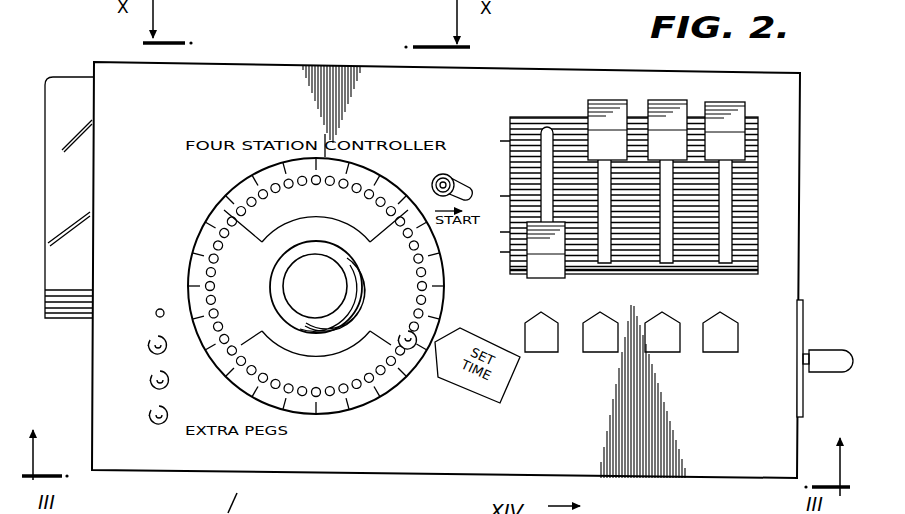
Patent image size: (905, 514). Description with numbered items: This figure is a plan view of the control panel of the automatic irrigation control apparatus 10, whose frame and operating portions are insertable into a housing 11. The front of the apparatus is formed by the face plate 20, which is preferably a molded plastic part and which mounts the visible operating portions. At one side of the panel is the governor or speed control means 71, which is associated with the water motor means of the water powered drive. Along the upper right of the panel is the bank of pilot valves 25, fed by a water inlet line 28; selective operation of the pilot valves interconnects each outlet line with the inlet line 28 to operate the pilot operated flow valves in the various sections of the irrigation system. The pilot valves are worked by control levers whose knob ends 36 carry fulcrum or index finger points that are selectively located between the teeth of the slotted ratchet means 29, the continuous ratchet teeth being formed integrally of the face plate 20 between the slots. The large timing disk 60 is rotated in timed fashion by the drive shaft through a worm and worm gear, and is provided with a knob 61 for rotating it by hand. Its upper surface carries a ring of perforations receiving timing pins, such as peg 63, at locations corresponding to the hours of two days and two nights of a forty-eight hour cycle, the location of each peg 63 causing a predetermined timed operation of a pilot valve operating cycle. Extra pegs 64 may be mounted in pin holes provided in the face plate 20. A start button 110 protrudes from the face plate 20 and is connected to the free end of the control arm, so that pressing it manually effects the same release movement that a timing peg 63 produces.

The control apparatus 10 is at (573, 54).
The housing 11 is at (661, 458).
The face plate 20 is at (280, 82).
The bank of pilot valves 25 is at (810, 304).
The water inlet line 28 is at (822, 357).
The slotted ratchet means 29 is at (758, 216).
The knob end 36 is at (717, 103).
The timing disk 60 is at (197, 242).
The knob 61 is at (317, 287).
The timing peg 63 is at (418, 336).
The extra pegs 64 is at (151, 383).
The governor or speed control means 71 is at (76, 322).
The start button 110 is at (447, 175).